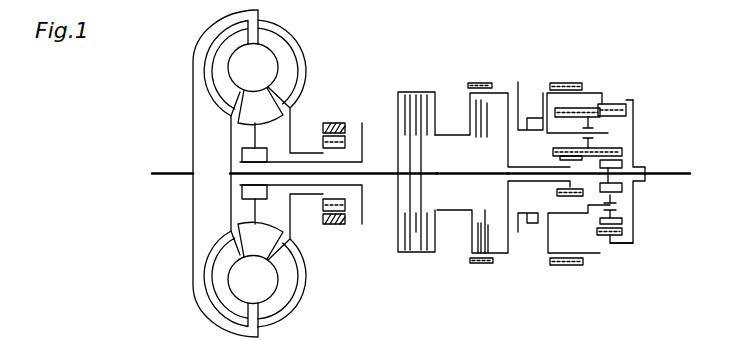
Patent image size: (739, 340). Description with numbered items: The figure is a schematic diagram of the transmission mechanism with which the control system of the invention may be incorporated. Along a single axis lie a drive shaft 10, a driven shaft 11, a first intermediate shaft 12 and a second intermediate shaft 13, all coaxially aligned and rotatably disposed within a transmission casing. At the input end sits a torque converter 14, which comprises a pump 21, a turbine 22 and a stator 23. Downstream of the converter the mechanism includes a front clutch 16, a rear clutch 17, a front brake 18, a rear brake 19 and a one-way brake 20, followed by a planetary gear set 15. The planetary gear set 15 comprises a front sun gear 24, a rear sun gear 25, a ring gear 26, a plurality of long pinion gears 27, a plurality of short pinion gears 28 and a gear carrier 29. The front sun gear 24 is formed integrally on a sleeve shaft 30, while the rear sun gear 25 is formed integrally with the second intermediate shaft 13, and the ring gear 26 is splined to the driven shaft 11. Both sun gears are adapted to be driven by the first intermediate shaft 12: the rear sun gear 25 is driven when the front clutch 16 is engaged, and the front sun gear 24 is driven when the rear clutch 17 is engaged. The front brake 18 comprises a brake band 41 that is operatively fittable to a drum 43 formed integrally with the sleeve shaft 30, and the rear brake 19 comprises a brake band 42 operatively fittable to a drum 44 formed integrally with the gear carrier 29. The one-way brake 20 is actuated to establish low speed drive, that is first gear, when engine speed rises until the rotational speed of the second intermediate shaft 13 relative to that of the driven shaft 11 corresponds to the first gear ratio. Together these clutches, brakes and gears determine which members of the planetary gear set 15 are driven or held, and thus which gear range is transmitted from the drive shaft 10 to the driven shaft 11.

The drive shaft 10 is at (152, 176).
The driven shaft 11 is at (672, 176).
The first intermediate shaft 12 is at (378, 176).
The second intermediate shaft 13 is at (460, 176).
The torque converter 14 is at (252, 173).
The planetary gear set 15 is at (656, 110).
The front clutch 16 is at (412, 92).
The rear clutch 17 is at (488, 103).
The front brake 18 is at (473, 83).
The rear brake 19 is at (572, 83).
The one-way brake 20 is at (533, 117).
The pump 21 is at (298, 66).
The turbine 22 is at (212, 58).
The stator 23 is at (255, 174).
The front sun gear 24 is at (557, 193).
The rear sun gear 25 is at (622, 163).
The ring gear 26 is at (600, 104).
The long pinion gears 27 is at (555, 112).
The short pinion gears 28 is at (622, 221).
The gear carrier 29 is at (547, 240).
The sleeve shaft 30 is at (508, 167).
The brake band 41 is at (481, 264).
The brake band 42 is at (578, 265).
The drum 43 is at (468, 253).
The drum 44 is at (597, 253).